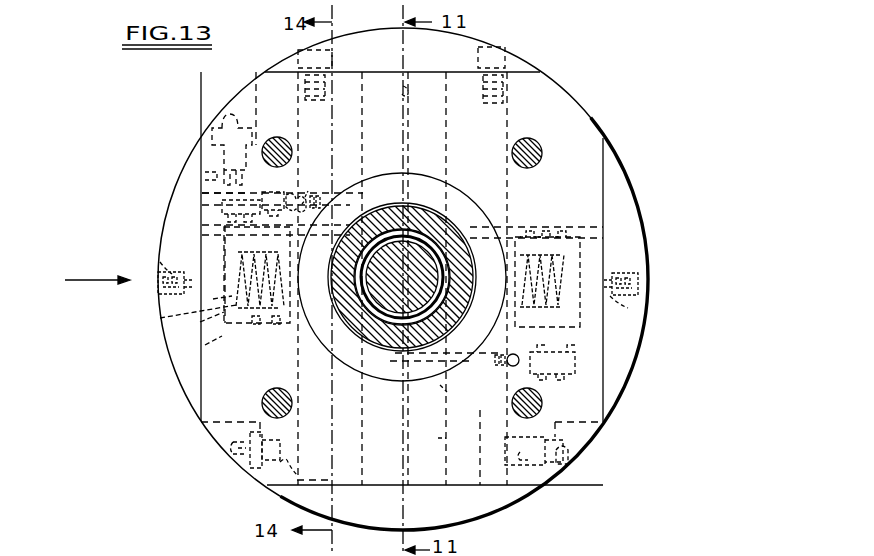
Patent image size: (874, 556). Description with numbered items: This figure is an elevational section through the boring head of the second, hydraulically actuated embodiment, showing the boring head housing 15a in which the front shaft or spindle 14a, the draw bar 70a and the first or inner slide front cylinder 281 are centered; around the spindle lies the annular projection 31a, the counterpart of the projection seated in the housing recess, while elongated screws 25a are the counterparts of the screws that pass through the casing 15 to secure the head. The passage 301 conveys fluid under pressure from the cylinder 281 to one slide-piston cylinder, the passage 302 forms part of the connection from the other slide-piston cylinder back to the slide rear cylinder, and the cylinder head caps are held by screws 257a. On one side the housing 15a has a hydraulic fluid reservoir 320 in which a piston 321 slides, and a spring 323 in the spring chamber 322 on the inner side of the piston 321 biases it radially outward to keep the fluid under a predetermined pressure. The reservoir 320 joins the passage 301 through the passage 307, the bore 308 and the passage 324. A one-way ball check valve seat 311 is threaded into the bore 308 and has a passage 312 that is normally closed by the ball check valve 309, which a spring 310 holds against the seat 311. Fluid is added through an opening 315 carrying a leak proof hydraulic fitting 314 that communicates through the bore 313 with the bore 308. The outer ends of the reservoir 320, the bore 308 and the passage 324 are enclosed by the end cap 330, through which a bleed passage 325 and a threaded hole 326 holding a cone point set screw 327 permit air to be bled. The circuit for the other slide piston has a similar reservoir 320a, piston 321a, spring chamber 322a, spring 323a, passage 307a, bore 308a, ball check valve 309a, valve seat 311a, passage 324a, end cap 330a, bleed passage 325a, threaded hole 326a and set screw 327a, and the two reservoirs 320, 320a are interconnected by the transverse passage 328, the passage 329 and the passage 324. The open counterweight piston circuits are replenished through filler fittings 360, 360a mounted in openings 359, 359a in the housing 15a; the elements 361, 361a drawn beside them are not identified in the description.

The casing 15 is at (97, 269).
The boring head housing 15a is at (563, 114).
The elongated screw 25a is at (290, 132).
The front shaft or spindle 14a is at (392, 352).
The annular projection 31a is at (458, 230).
The draw bar 70a is at (393, 300).
The first or inner cylinder 281 is at (361, 298).
The screws 257a is at (318, 53).
The passage 301 is at (409, 86).
The passage 302 is at (440, 438).
The passage 307 is at (360, 204).
The passage 307a is at (441, 388).
The bore 308 is at (268, 189).
The bore 308a is at (690, 392).
The ball check valve 309 is at (302, 168).
The ball check valve 309a is at (535, 354).
The spring 310 is at (300, 198).
The one-way ball check valve seat 311 is at (212, 192).
The one-way ball check valve seat 311a is at (690, 380).
The passage 312 is at (222, 206).
The bore 313 is at (206, 175).
The hydraulic fitting 314 is at (222, 122).
The opening 315 is at (262, 97).
The hydraulic fluid reservoir 320 is at (202, 322).
The hydraulic fluid reservoir 320a is at (580, 350).
The piston 321 is at (250, 314).
The piston 321a is at (582, 332).
The spring chamber 322 is at (268, 322).
The spring chamber 322a is at (570, 262).
The spring 323 is at (162, 318).
The spring 323a is at (560, 237).
The passage 324 is at (200, 231).
The passage 324a is at (583, 362).
The bleed passage 325 is at (214, 299).
The bleed passage 325a is at (598, 285).
The threaded hole 326 is at (158, 284).
The threaded hole 326a is at (640, 285).
The cone point set screw 327 is at (162, 260).
The cone point set screw 327a is at (640, 296).
The transverse passage 328 is at (582, 225).
The passage 329 is at (745, 228).
The end cap 330 is at (206, 346).
The end cap 330a is at (585, 372).
The opening 359 is at (212, 437).
The opening 359a is at (580, 438).
The filler fitting 360 is at (230, 450).
The filler fitting 360a is at (575, 460).
The latch spring 361 is at (266, 487).
The latch spring 361a is at (525, 498).